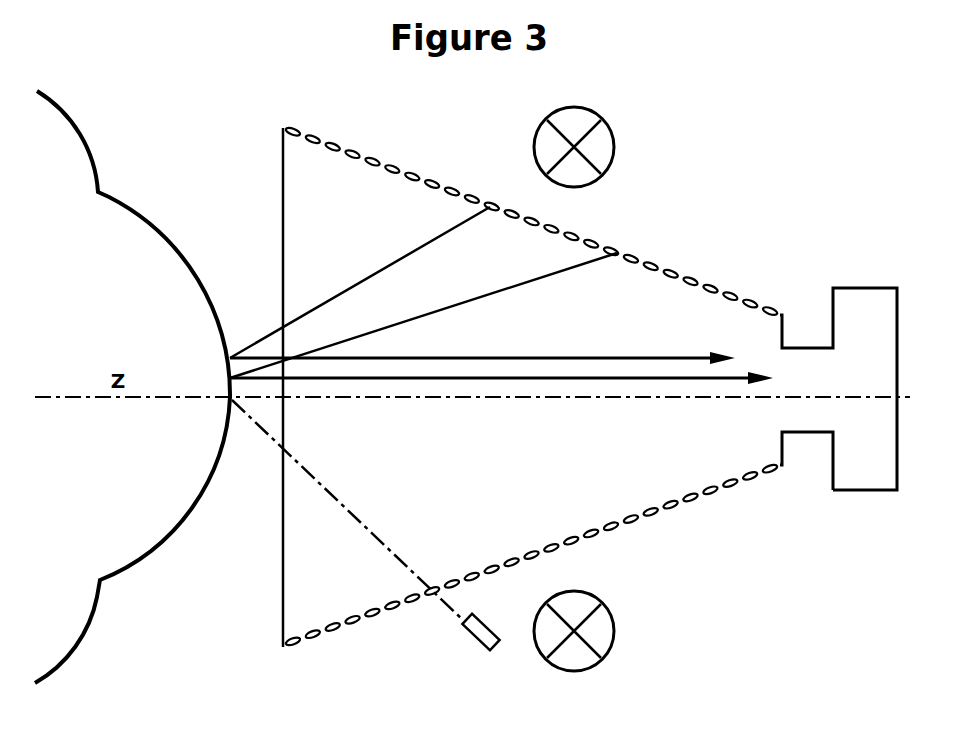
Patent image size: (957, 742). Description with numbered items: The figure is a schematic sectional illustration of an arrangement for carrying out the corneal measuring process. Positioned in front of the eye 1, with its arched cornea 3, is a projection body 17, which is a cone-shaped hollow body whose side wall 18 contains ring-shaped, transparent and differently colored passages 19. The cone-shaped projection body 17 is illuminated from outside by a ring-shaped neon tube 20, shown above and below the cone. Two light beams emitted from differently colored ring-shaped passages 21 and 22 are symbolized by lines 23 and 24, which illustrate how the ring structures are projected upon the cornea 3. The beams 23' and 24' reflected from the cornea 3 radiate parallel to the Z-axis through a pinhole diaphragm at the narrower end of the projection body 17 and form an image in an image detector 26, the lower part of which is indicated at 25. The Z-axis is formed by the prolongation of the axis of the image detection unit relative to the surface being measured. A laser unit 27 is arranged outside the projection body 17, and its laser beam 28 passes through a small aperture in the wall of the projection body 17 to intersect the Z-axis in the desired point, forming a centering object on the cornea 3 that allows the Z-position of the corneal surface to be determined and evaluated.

The eye 1 is at (180, 130).
The cornea 3 is at (167, 236).
The projection body 17 is at (376, 140).
The side wall 18 is at (531, 574).
The passages 19 is at (405, 607).
The ring-shaped neon tube 20 is at (598, 147).
The ring-shaped passage 21 is at (617, 253).
The ring-shaped passage 22 is at (508, 210).
The line 23 is at (423, 304).
The reflected beam 23' is at (501, 354).
The line 24 is at (360, 282).
The reflected beam 24' is at (482, 337).
The holder lower part 25 is at (807, 420).
The image detector 26 is at (865, 310).
The laser unit 27 is at (477, 648).
The laser beam 28 is at (355, 510).